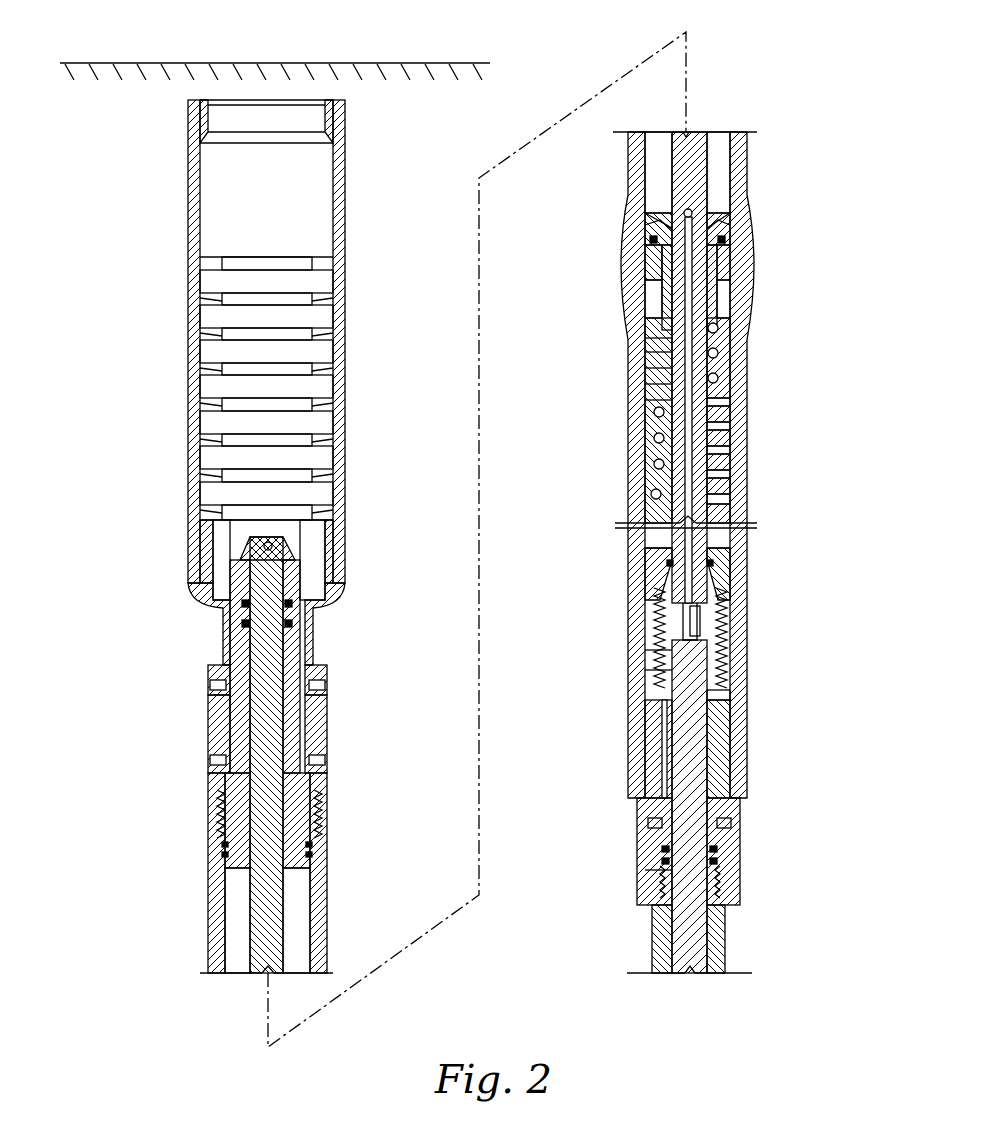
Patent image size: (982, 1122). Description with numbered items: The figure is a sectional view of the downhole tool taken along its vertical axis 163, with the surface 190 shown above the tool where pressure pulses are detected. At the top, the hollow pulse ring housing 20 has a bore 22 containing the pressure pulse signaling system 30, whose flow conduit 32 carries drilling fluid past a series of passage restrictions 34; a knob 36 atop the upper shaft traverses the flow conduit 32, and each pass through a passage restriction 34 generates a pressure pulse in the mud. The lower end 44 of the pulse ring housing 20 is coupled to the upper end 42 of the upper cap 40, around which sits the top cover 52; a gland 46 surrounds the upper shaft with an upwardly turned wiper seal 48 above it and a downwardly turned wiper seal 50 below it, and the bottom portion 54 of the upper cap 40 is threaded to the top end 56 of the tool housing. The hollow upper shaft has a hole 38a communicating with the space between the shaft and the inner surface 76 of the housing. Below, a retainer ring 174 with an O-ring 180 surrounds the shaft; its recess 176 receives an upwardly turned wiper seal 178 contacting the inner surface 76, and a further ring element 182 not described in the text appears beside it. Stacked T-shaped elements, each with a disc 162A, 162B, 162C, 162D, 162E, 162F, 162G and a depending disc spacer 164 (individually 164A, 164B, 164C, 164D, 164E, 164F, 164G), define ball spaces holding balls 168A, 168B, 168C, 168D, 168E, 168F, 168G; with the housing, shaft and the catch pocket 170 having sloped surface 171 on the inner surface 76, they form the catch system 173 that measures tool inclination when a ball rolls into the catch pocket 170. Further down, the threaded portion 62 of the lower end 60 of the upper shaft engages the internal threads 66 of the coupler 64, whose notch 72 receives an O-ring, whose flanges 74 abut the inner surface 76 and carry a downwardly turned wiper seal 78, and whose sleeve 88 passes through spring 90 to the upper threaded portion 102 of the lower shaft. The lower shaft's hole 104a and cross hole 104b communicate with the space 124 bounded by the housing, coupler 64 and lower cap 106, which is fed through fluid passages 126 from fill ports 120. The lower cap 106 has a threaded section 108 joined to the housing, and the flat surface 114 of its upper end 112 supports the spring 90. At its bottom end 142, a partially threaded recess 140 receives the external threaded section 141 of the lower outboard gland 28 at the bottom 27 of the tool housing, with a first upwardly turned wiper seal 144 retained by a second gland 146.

The surface 190 is at (221, 63).
The pulse ring housing 20 is at (340, 230).
The bore 22 is at (330, 112).
The pressure pulse signaling system 30 is at (268, 330).
The flow conduit 32 is at (322, 377).
The passage restrictions 34 is at (198, 405).
The knob 36 is at (268, 530).
The lower end of pulse ring housing 44 is at (312, 586).
The upper end of upper cap 42 is at (240, 604).
The gland 46 is at (240, 623).
The upwardly turned wiper seal 48 is at (294, 604).
The downwardly turned wiper seal 50 is at (294, 624).
The top cover 52 is at (327, 668).
The upper cap 40 is at (323, 736).
The bottom portion of upper cap 54 is at (222, 802).
The top end of tool housing 56 is at (320, 808).
The vertical axis 163 is at (479, 506).
The hole 38a is at (655, 265).
The inner surface 76 is at (718, 136).
The retainer ring 174 is at (684, 219).
The O-ring 180 is at (640, 190).
The seal 182 is at (650, 249).
The recess 176 is at (728, 228).
The upwardly turned wiper seal 178 is at (738, 249).
The catch pocket 170 is at (735, 282).
The sloped surface 171 is at (640, 292).
The disc spacer 164 is at (655, 303).
The disc 162G is at (650, 338).
The disc spacer 164G is at (650, 353).
The disc 162F is at (650, 369).
The disc spacer 164F is at (650, 385).
The disc 162E is at (650, 400).
The ball 168D is at (652, 413).
The ball 168C is at (652, 439).
The ball 168B is at (652, 465).
The ball 168A is at (650, 495).
The ball 168G is at (720, 329).
The ball 168F is at (720, 353).
The ball 168E is at (720, 378).
The disc spacer 164E is at (730, 400).
The disc 162D is at (730, 412).
The disc spacer 164D is at (730, 426).
The disc 162C is at (730, 438).
The disc spacer 164C is at (730, 450).
The disc 162B is at (730, 462).
The disc spacer 164B is at (730, 474).
The disc 162A is at (730, 486).
The disc spacer 164A is at (730, 499).
The catch system 173 is at (826, 270).
The notch 72 is at (660, 548).
The lower end of upper shaft 60 is at (648, 572).
The flanges 74 is at (725, 566).
The downwardly turned wiper seal 78 is at (655, 582).
The threaded portion 62 is at (730, 596).
The sleeve 88 is at (683, 622).
The coupler 64 is at (700, 612).
The internal threads 66 is at (676, 632).
The upper threaded portion 102 is at (725, 636).
The spring 90 is at (710, 664).
The hole 104a is at (652, 651).
The cross hole 104b is at (652, 671).
The flat surface 114 is at (728, 692).
The upper end of lower cap 112 is at (728, 712).
The space 124 is at (652, 702).
The threaded section 108 is at (642, 787).
The fluid passages 126 is at (648, 822).
The lower cap 106 is at (640, 850).
The fill ports 120 is at (736, 826).
The first upwardly turned wiper seal 144 is at (720, 848).
The second gland 146 is at (720, 861).
The bottom end of lower cap 142 is at (738, 880).
The partially threaded recess 140 is at (662, 872).
The bottom of tool housing 27 is at (655, 912).
The lower outboard gland 28 is at (716, 962).
The external threaded section 141 is at (665, 935).